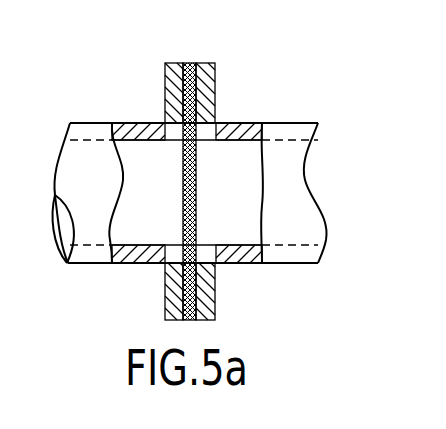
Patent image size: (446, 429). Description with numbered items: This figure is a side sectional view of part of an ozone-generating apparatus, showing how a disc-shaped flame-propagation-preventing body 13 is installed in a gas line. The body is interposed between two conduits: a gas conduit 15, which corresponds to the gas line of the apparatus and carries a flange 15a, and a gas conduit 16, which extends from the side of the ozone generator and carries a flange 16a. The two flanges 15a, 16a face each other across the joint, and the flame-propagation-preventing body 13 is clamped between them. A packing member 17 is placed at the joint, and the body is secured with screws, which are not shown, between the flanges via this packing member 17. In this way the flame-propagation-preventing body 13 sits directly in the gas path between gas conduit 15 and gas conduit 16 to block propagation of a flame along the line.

The flame-propagation-preventing body 13 is at (197, 203).
The gas conduit 15 is at (88, 133).
The flange of gas conduit 15a is at (174, 78).
The gas conduit 16 is at (244, 121).
The flange of gas conduit 16a is at (243, 130).
The packing member 17 is at (205, 82).